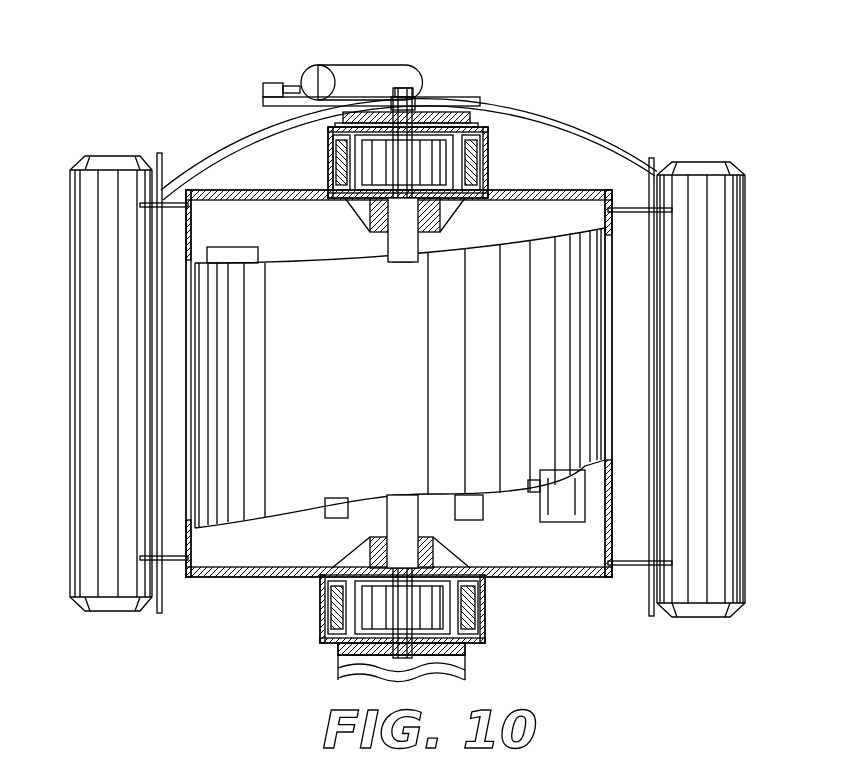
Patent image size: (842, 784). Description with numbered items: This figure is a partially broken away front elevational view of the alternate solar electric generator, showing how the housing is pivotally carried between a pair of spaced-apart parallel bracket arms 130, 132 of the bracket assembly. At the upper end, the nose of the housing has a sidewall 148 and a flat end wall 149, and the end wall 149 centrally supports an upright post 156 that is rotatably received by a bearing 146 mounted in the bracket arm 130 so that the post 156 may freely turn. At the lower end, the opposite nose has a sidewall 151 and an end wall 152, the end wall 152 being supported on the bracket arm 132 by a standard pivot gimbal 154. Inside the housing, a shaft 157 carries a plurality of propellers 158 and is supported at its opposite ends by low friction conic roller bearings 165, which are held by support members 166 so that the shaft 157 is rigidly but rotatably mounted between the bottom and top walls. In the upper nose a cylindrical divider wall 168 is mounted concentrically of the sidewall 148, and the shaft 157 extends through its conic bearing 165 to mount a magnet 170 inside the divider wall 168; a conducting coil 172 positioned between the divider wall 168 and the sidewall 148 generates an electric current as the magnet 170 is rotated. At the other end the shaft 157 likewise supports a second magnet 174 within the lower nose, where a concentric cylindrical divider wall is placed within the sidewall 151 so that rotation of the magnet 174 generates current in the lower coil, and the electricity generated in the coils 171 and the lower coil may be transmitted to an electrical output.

The bracket arm 130 is at (492, 108).
The bracket arm 132 is at (467, 671).
The bearing 146 is at (452, 112).
The sidewall 148 is at (490, 183).
The flat end wall 149 is at (478, 125).
The sidewall 151 is at (488, 605).
The end wall 152 is at (467, 649).
The pivot gimbal 154 is at (395, 664).
The upright post 156 is at (416, 100).
The shaft 157 is at (365, 216).
The propeller 158 is at (512, 498).
The conic roller bearing 165 is at (440, 232).
The support member 166 is at (455, 212).
The divider wall 168 is at (482, 165).
The magnet 170 is at (380, 166).
The conducting coil 171 is at (336, 158).
The conducting coil 172 is at (328, 602).
The magnet 174 is at (365, 616).